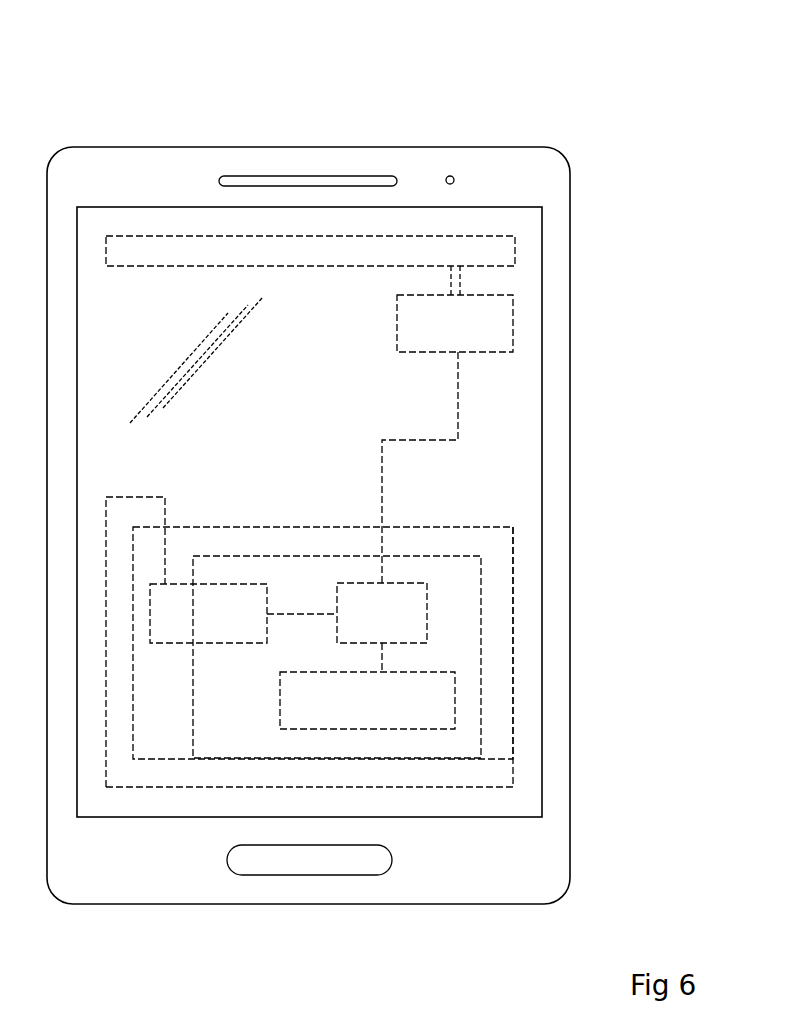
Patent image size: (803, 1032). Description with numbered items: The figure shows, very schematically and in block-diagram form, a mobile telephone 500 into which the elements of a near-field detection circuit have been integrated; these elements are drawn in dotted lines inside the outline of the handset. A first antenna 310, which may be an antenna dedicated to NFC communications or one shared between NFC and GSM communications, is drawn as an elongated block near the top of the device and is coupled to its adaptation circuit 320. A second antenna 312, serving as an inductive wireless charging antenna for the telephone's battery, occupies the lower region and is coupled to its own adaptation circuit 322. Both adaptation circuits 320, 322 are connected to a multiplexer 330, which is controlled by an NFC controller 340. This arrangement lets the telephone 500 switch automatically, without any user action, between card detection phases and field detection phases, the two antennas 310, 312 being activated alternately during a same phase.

The mobile telephone 500 is at (541, 110).
The first antenna 310 is at (179, 267).
The second antenna 312 is at (222, 527).
The adaptation circuit 320 is at (397, 328).
The adaptation circuit 322 is at (192, 644).
The multiplexer 330 is at (427, 620).
The NFC controller 340 is at (280, 712).